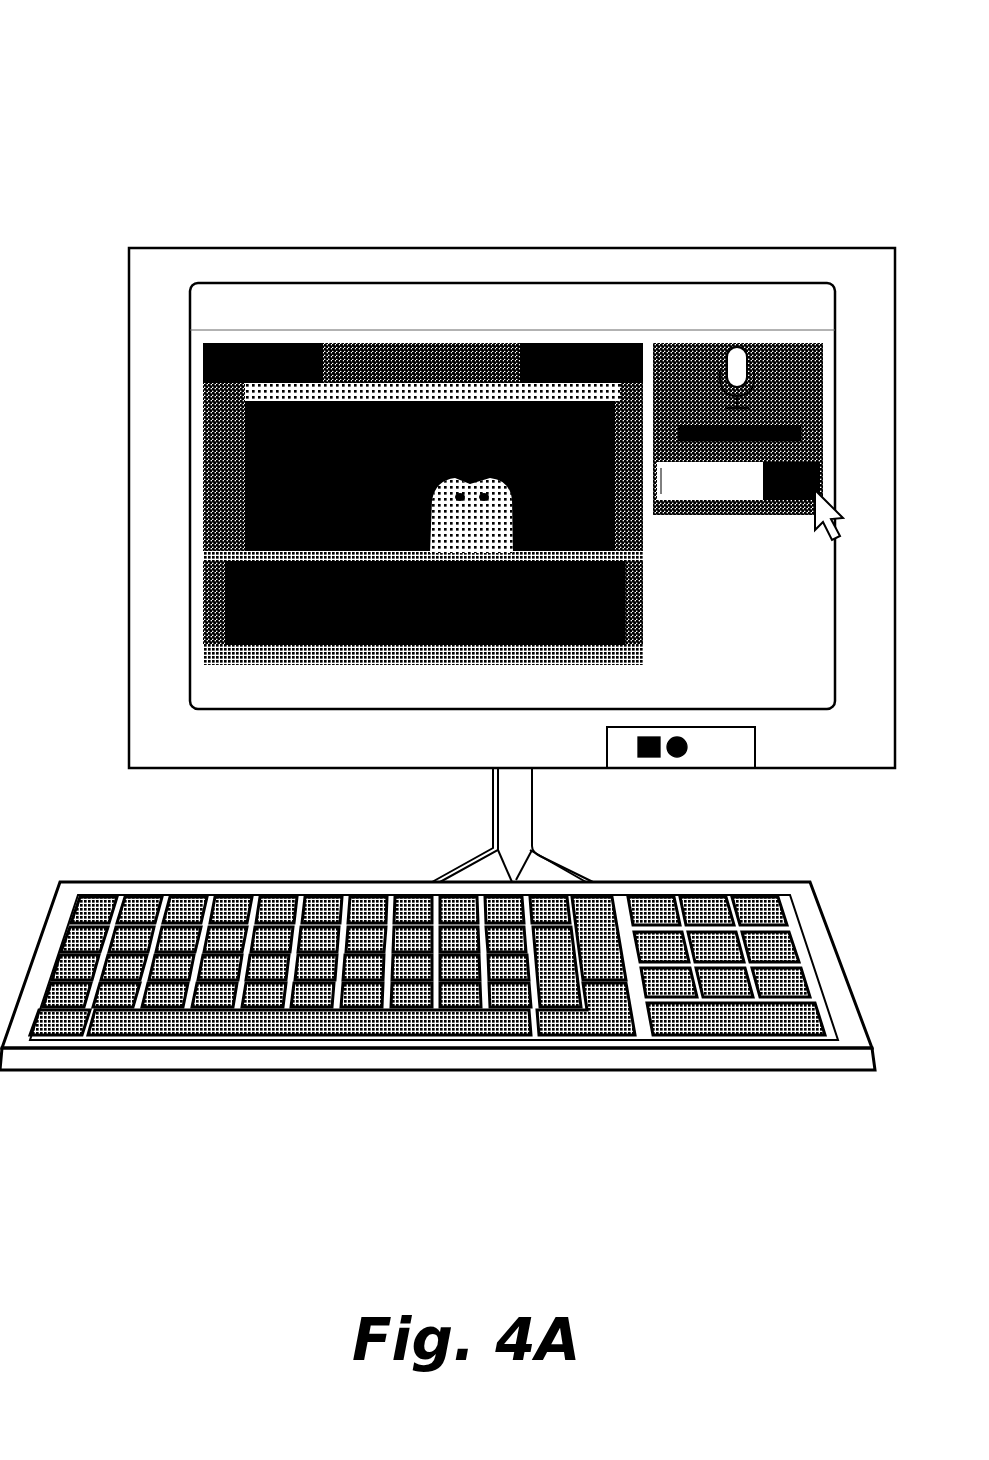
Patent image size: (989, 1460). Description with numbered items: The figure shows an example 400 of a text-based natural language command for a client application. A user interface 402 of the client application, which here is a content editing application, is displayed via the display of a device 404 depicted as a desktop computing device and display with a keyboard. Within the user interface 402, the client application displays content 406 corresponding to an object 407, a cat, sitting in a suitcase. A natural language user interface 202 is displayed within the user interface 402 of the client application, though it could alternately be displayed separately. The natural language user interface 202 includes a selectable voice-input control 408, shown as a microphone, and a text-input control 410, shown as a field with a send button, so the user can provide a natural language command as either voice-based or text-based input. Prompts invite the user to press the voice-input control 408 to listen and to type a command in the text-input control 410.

The example 400 is at (128, 62).
The natural language user interface 202 is at (704, 372).
The user interface 402 is at (255, 701).
The device 404 is at (195, 748).
The content 406 is at (410, 355).
The object 407 is at (487, 490).
The selectable voice-input control 408 is at (740, 347).
The text-input control 410 is at (673, 492).